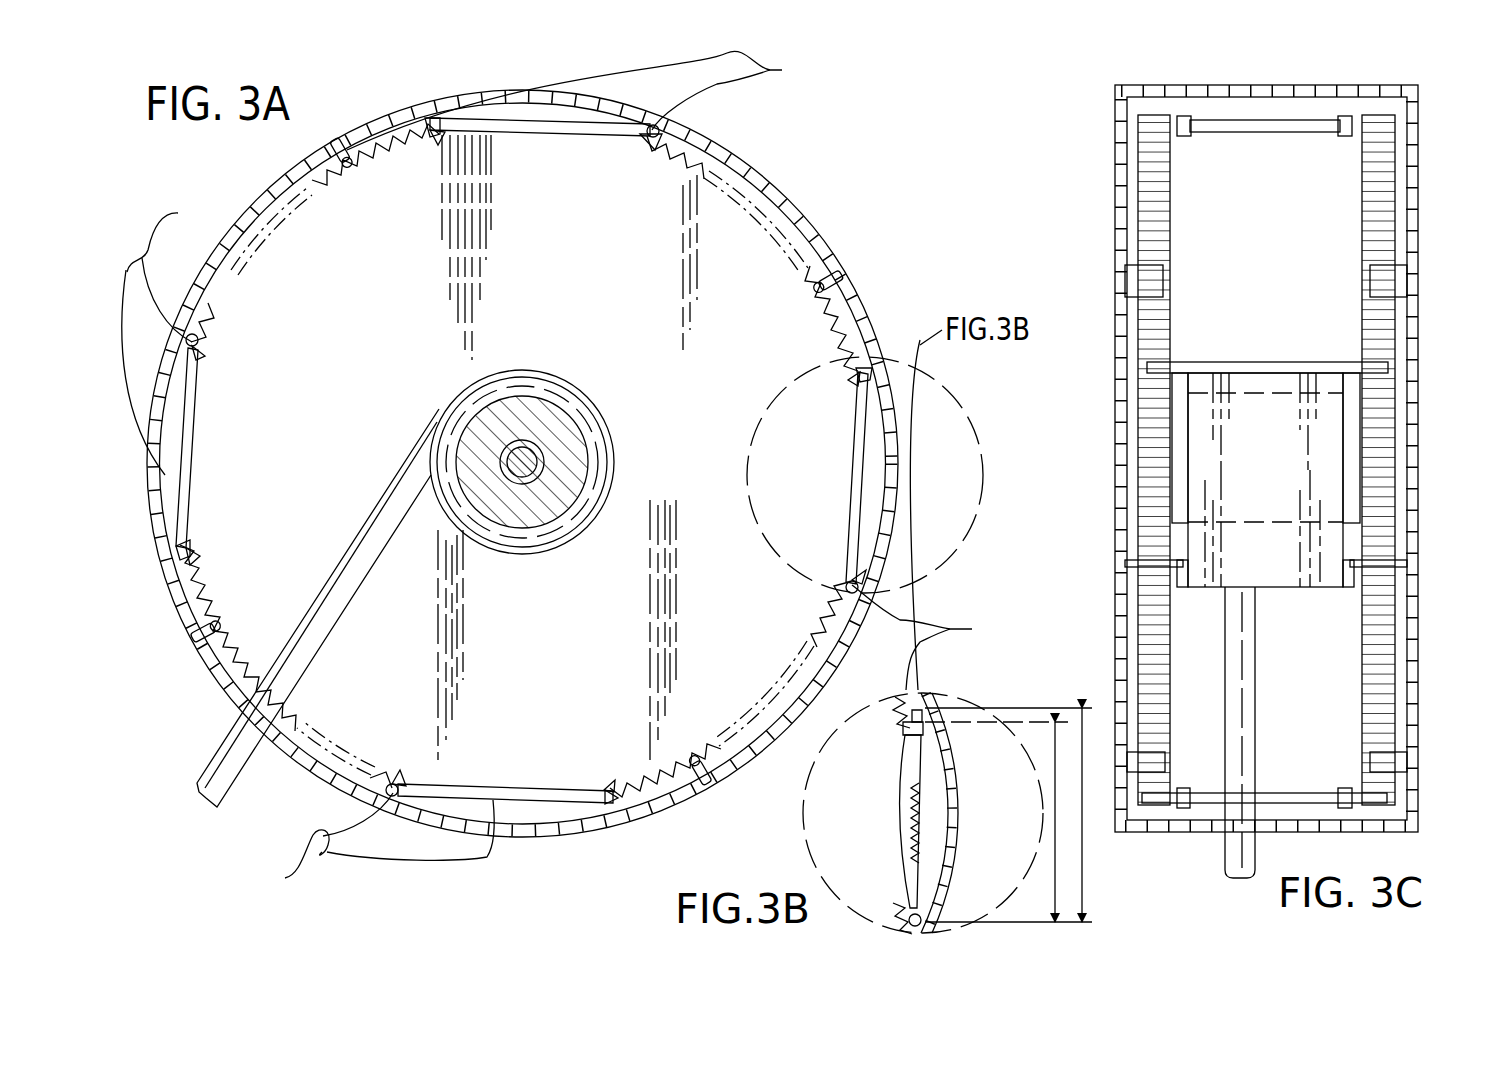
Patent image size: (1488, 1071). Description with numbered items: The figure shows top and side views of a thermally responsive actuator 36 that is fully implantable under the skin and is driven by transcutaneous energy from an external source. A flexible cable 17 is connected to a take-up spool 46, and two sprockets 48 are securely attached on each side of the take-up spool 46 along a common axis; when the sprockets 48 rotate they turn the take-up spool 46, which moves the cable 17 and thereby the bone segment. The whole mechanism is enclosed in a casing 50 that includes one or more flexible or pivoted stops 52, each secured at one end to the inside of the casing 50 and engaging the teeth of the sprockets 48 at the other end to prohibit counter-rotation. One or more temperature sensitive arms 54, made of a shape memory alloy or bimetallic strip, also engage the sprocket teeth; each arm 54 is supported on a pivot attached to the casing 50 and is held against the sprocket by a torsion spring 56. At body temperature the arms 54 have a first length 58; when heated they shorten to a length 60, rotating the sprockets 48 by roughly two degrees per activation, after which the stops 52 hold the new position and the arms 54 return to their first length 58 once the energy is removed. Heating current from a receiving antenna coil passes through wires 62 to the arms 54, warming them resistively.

In FIG. 3A, the cable 17 is at (232, 742).
In FIG. 3C, the cable 17 is at (1232, 860).
In FIG. 3A, the actuator 36 is at (770, 150).
In FIG. 3C, the actuator 36 is at (1382, 86).
In FIG. 3A, the take-up spool 46 is at (520, 413).
In FIG. 3C, the take-up spool 46 is at (1264, 395).
In FIG. 3A, the sprockets 48 is at (320, 220).
In FIG. 3C, the sprockets 48 is at (1150, 162).
In FIG. 3A, the casing 50 is at (805, 212).
In FIG. 3C, the casing 50 is at (1412, 212).
In FIG. 3A, the stops 52 is at (346, 148).
In FIG. 3C, the stops 52 is at (1138, 282).
In FIG. 3A, the temperature sensitive arms 54 is at (498, 118).
In FIG. 3B, the temperature sensitive arms 54 is at (905, 806).
In FIG. 3C, the temperature sensitive arms 54 is at (1240, 120).
In FIG. 3A, the torsion spring 56 is at (620, 140).
In FIG. 3B, the torsion spring 56 is at (908, 906).
In FIG. 3C, the torsion spring 56 is at (1128, 562).
In FIG. 3B, the first length 58 is at (1012, 815).
In FIG. 3B, the shortened length 60 is at (1000, 822).
In FIG. 3A, the wires 62 is at (565, 477).